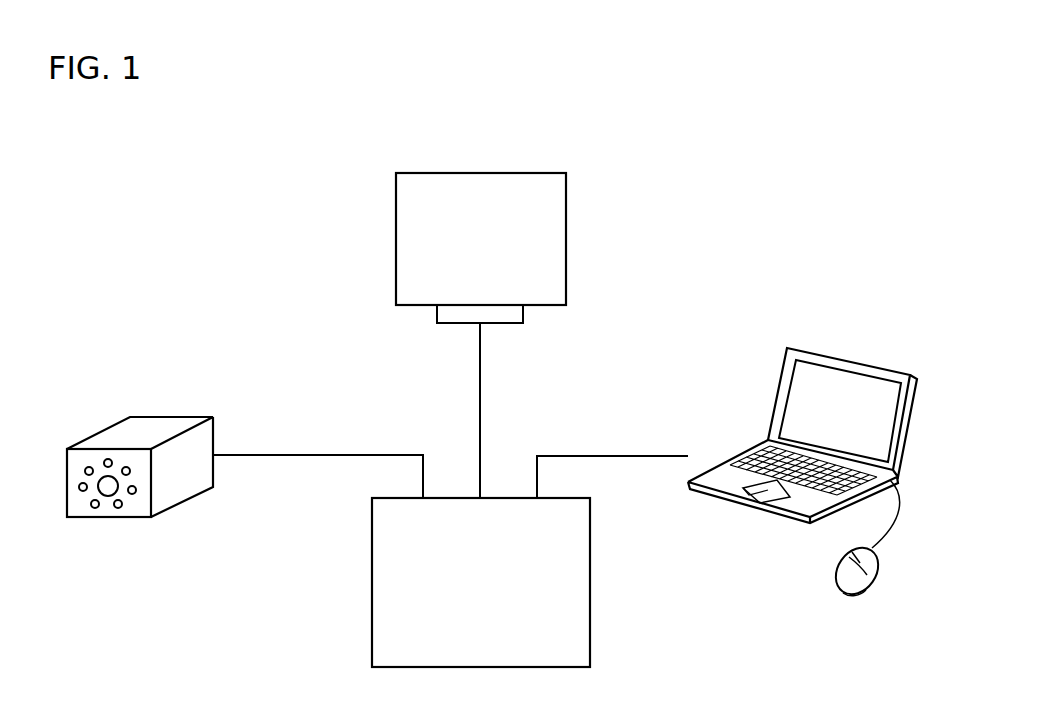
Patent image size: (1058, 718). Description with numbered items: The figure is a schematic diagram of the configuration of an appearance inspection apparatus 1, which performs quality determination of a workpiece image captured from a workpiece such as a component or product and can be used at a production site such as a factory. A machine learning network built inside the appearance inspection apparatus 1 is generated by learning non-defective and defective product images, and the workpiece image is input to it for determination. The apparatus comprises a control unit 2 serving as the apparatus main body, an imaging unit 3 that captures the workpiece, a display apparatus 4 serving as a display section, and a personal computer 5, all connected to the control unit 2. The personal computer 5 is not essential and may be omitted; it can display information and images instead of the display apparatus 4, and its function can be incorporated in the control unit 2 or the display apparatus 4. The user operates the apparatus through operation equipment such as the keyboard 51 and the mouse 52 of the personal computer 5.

The appearance inspection apparatus 1 is at (655, 263).
The control unit 2 is at (590, 637).
The imaging unit 3 is at (162, 417).
The display apparatus 4 is at (396, 220).
The personal computer 5 is at (816, 452).
The keyboard 51 is at (813, 488).
The mouse 52 is at (867, 583).